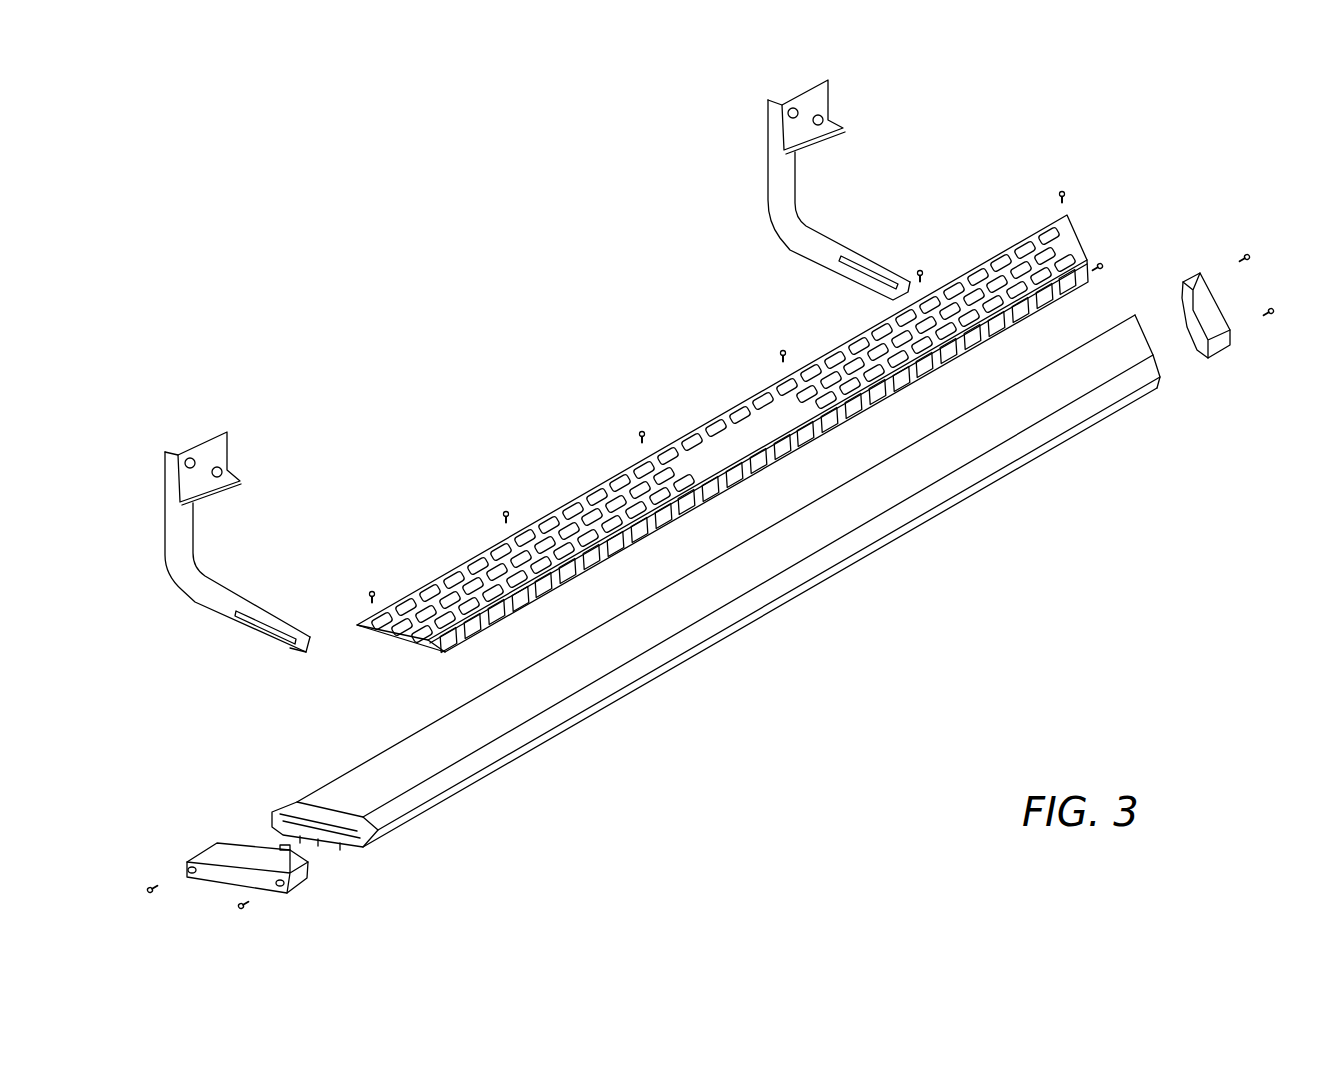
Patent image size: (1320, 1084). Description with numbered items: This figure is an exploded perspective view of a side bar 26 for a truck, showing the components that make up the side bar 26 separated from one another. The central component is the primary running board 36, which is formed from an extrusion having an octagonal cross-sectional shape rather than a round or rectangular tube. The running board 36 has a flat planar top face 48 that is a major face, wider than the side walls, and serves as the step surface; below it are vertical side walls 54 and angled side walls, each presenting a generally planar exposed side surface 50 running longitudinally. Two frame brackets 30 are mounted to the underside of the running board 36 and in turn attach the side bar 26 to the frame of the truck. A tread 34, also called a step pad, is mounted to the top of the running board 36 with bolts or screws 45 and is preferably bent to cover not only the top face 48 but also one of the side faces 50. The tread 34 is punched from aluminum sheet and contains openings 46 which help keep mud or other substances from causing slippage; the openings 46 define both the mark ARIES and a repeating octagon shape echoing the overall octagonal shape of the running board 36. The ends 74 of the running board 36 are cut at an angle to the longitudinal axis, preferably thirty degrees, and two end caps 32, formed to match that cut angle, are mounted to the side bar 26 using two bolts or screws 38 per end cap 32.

The side bar 26 is at (607, 270).
The frame bracket 30 is at (785, 234).
The end cap 32 is at (1218, 348).
The tread 34 is at (722, 434).
The primary running board 36 is at (723, 561).
The bolts or screws 38 is at (152, 890).
The bolts or screws 45 is at (1100, 266).
The openings 46 is at (478, 560).
The top face 48 is at (848, 517).
The side face 50 is at (1055, 425).
The vertical side wall 54 is at (764, 606).
The ends of the running board 74 is at (1143, 327).